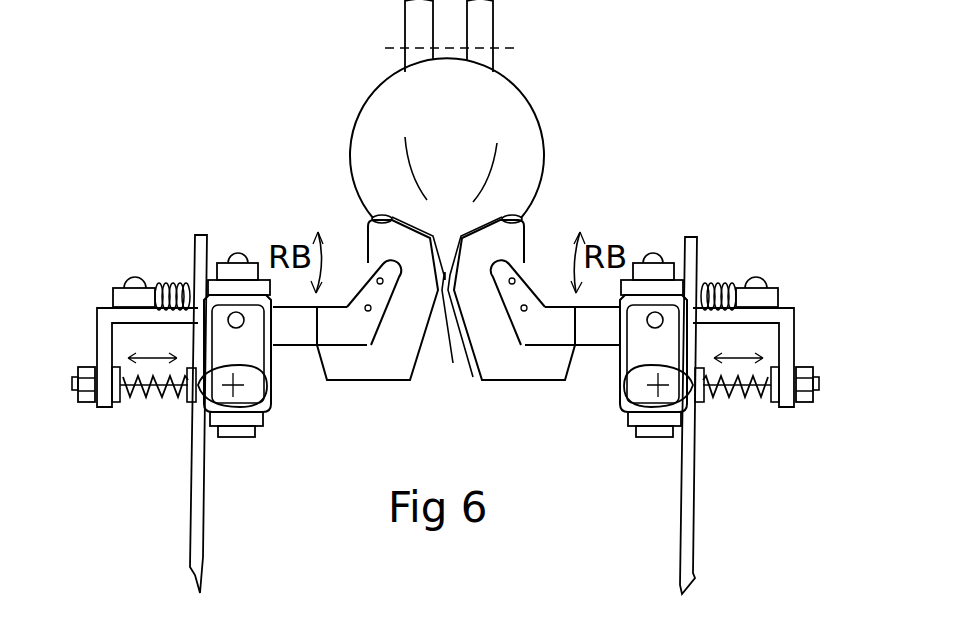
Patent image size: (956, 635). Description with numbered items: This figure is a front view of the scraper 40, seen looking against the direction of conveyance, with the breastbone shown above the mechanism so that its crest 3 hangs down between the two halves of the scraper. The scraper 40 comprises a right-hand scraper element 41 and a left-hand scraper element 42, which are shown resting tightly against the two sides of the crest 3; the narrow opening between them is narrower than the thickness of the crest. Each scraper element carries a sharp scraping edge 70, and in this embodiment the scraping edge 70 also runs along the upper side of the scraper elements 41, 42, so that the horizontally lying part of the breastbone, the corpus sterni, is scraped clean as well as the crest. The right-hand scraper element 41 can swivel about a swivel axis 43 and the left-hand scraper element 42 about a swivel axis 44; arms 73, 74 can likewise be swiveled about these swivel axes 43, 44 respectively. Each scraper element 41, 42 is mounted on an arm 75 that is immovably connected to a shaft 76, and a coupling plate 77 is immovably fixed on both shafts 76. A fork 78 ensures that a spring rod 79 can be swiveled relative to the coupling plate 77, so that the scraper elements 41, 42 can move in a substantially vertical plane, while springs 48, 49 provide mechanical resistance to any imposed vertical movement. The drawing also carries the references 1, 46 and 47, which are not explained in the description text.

The bag (pouch) 1 is at (505, 100).
The crest of the breastbone 3 is at (447, 307).
The scraper 40 is at (543, 480).
The right-hand scraper element 41 is at (513, 247).
The left-hand scraper element 42 is at (370, 247).
The swivel axis 43 is at (653, 257).
The swivel axis 44 is at (250, 253).
The right coil spring 46 is at (717, 293).
The left coil spring 47 is at (170, 280).
The spring 48 is at (748, 397).
The spring 49 is at (132, 397).
The scraping edge 70 is at (372, 219).
The arm 73 is at (785, 325).
The arm 74 is at (95, 325).
The arm 75 is at (322, 330).
The shaft 76 is at (253, 352).
The coupling plate 77 is at (242, 327).
The fork 78 is at (235, 400).
The spring rod 79 is at (167, 393).